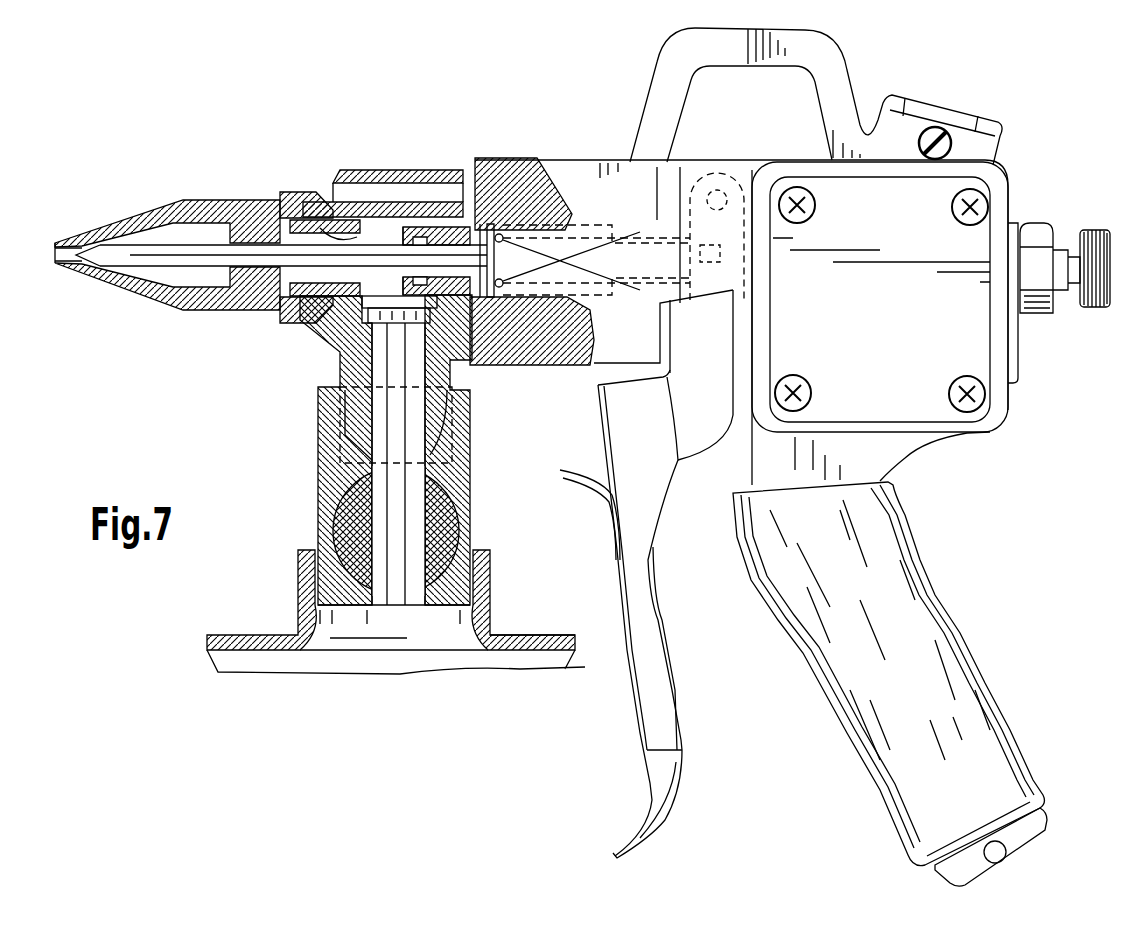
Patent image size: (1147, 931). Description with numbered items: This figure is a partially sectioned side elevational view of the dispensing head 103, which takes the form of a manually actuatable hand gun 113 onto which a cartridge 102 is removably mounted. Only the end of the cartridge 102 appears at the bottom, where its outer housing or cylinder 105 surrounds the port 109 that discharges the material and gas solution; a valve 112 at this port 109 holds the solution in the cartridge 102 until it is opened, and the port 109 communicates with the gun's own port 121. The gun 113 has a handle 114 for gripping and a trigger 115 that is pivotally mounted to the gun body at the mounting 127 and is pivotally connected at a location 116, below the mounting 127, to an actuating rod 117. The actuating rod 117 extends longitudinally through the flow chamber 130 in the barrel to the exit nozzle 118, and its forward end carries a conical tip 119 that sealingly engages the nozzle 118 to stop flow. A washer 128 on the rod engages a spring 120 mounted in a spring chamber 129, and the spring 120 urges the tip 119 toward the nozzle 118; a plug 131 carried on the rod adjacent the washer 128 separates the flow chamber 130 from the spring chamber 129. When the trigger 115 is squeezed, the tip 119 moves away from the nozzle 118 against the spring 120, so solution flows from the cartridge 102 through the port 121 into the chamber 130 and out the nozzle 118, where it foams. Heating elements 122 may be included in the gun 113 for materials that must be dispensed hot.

The cartridge 102 is at (232, 638).
The dispensing head 103 is at (964, 481).
The outer housing or cylinder 105 is at (537, 634).
The port 109 is at (345, 623).
The valve 112 is at (350, 520).
The hand gun 113 is at (594, 180).
The handle 114 is at (940, 665).
The trigger 115 is at (655, 677).
The location 116 is at (712, 255).
The actuating rod 117 is at (236, 312).
The exit nozzle 118 is at (115, 224).
The conical tip 119 is at (76, 268).
The spring 120 is at (522, 160).
The port 121 is at (397, 352).
The heating elements 122 is at (367, 186).
The mounting 127 is at (716, 192).
The washer 128 is at (432, 215).
The spring chamber 129 is at (554, 226).
The flow chamber 130 is at (320, 228).
The plug 131 is at (488, 278).